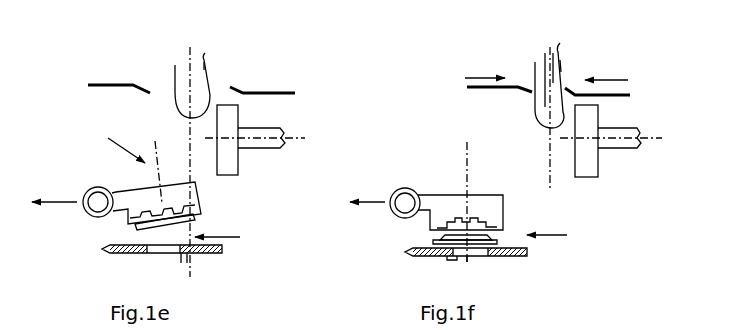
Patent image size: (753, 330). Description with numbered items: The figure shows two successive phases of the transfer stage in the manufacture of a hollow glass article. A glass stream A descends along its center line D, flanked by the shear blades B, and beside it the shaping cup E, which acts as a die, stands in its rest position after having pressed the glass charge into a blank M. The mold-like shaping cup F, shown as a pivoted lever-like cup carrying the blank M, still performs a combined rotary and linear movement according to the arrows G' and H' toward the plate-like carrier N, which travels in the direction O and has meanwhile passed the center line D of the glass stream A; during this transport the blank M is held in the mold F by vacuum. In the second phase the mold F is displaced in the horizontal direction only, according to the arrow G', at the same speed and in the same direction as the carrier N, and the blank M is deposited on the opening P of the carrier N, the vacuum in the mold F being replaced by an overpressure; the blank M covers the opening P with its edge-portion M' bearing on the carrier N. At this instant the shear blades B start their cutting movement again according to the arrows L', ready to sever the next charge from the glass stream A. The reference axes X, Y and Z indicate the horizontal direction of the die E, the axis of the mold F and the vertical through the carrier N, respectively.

In FIG. 1E, the glass stream A is at (206, 76).
In FIG. 1F, the glass stream A is at (562, 72).
In FIG. 1E, the shear blades B is at (103, 84).
In FIG. 1F, the shear blades B is at (487, 88).
In FIG. 1E, the center line of the glass stream D is at (192, 149).
In FIG. 1F, the center line of the glass stream D is at (549, 108).
In FIG. 1E, the shaping cup (die) E is at (232, 175).
In FIG. 1F, the shaping cup (die) E is at (588, 177).
In FIG. 1E, the mold-like shaping cup F is at (203, 201).
In FIG. 1F, the mold-like shaping cup F is at (437, 193).
In FIG. 1E, the arrow of linear movement of the mold G' is at (54, 217).
In FIG. 1F, the arrow of linear movement of the mold G' is at (367, 216).
In FIG. 1E, the arrow of rotary movement of the mold H' is at (122, 139).
In FIG. 1F, the arrows of shear blade cutting movement L' is at (546, 65).
In FIG. 1E, the blank M is at (136, 229).
In FIG. 1F, the blank M is at (439, 236).
In FIG. 1F, the edge-portion of the blank M' is at (488, 216).
In FIG. 1E, the plate-like carrier N is at (110, 257).
In FIG. 1F, the plate-like carrier N is at (417, 256).
In FIG. 1E, the direction of carrier travel O is at (217, 225).
In FIG. 1F, the direction of carrier travel O is at (547, 222).
In FIG. 1E, the opening P is at (190, 260).
In FIG. 1F, the opening P is at (453, 256).
In FIG. 1E, the X axis X is at (264, 140).
In FIG. 1F, the X axis X is at (621, 139).
In FIG. 1E, the Y axis Y is at (156, 161).
In FIG. 1F, the Y axis Y is at (467, 191).
In FIG. 1F, the Z axis Z is at (469, 269).